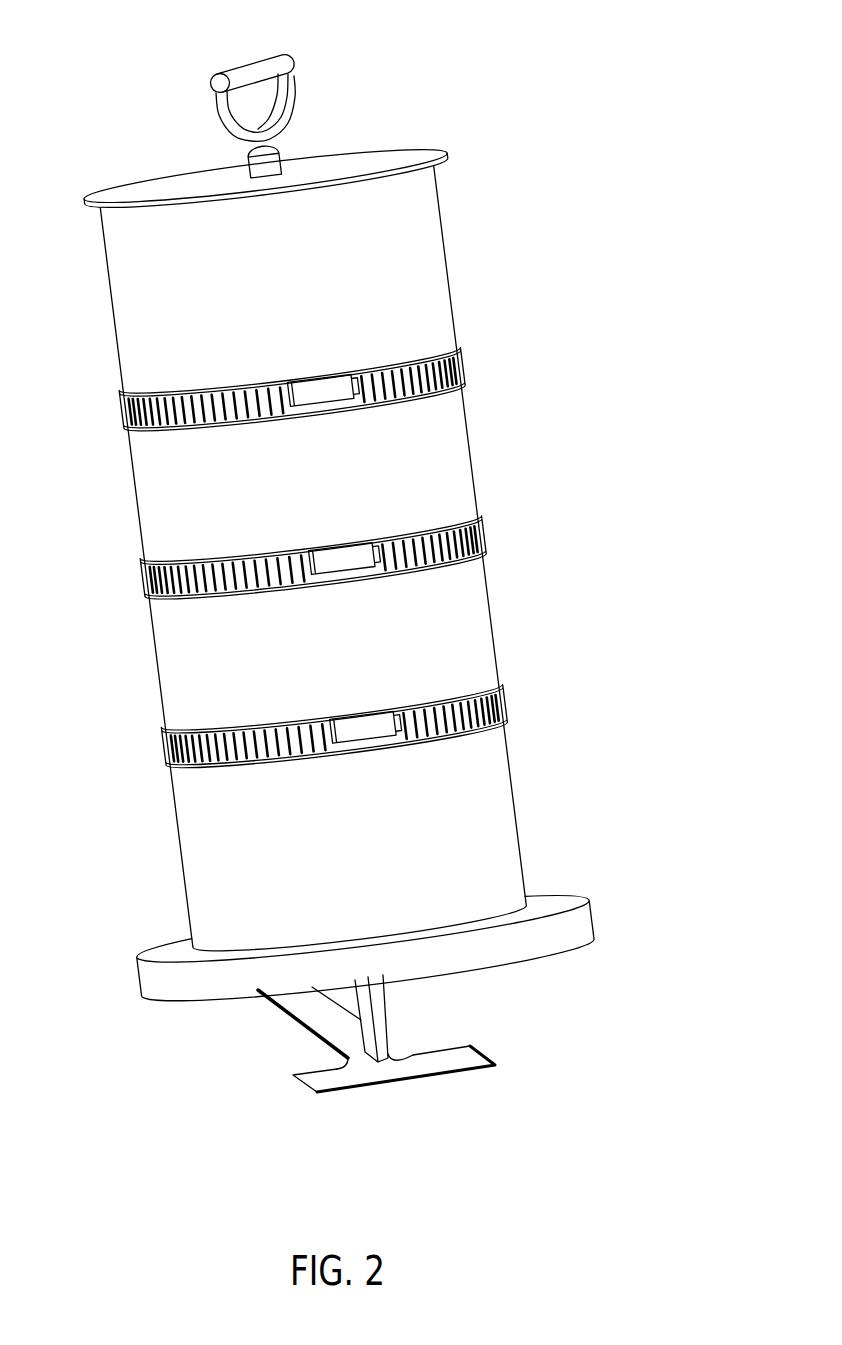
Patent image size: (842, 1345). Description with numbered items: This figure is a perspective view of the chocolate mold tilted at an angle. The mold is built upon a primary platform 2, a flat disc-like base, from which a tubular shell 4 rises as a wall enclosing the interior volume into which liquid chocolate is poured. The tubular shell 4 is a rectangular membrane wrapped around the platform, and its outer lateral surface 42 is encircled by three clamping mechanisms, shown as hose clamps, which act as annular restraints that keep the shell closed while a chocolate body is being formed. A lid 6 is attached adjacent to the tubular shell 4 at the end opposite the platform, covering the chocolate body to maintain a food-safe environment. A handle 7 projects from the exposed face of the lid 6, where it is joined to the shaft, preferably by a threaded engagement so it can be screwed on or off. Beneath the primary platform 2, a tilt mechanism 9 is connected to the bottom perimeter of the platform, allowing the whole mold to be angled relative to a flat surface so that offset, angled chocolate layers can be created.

The primary platform 2 is at (577, 925).
The tubular shell 4 is at (68, 657).
The lid 6 is at (368, 158).
The handle 7 is at (211, 80).
The tilt mechanism 9 is at (330, 1078).
The outer lateral surface 42 is at (207, 825).